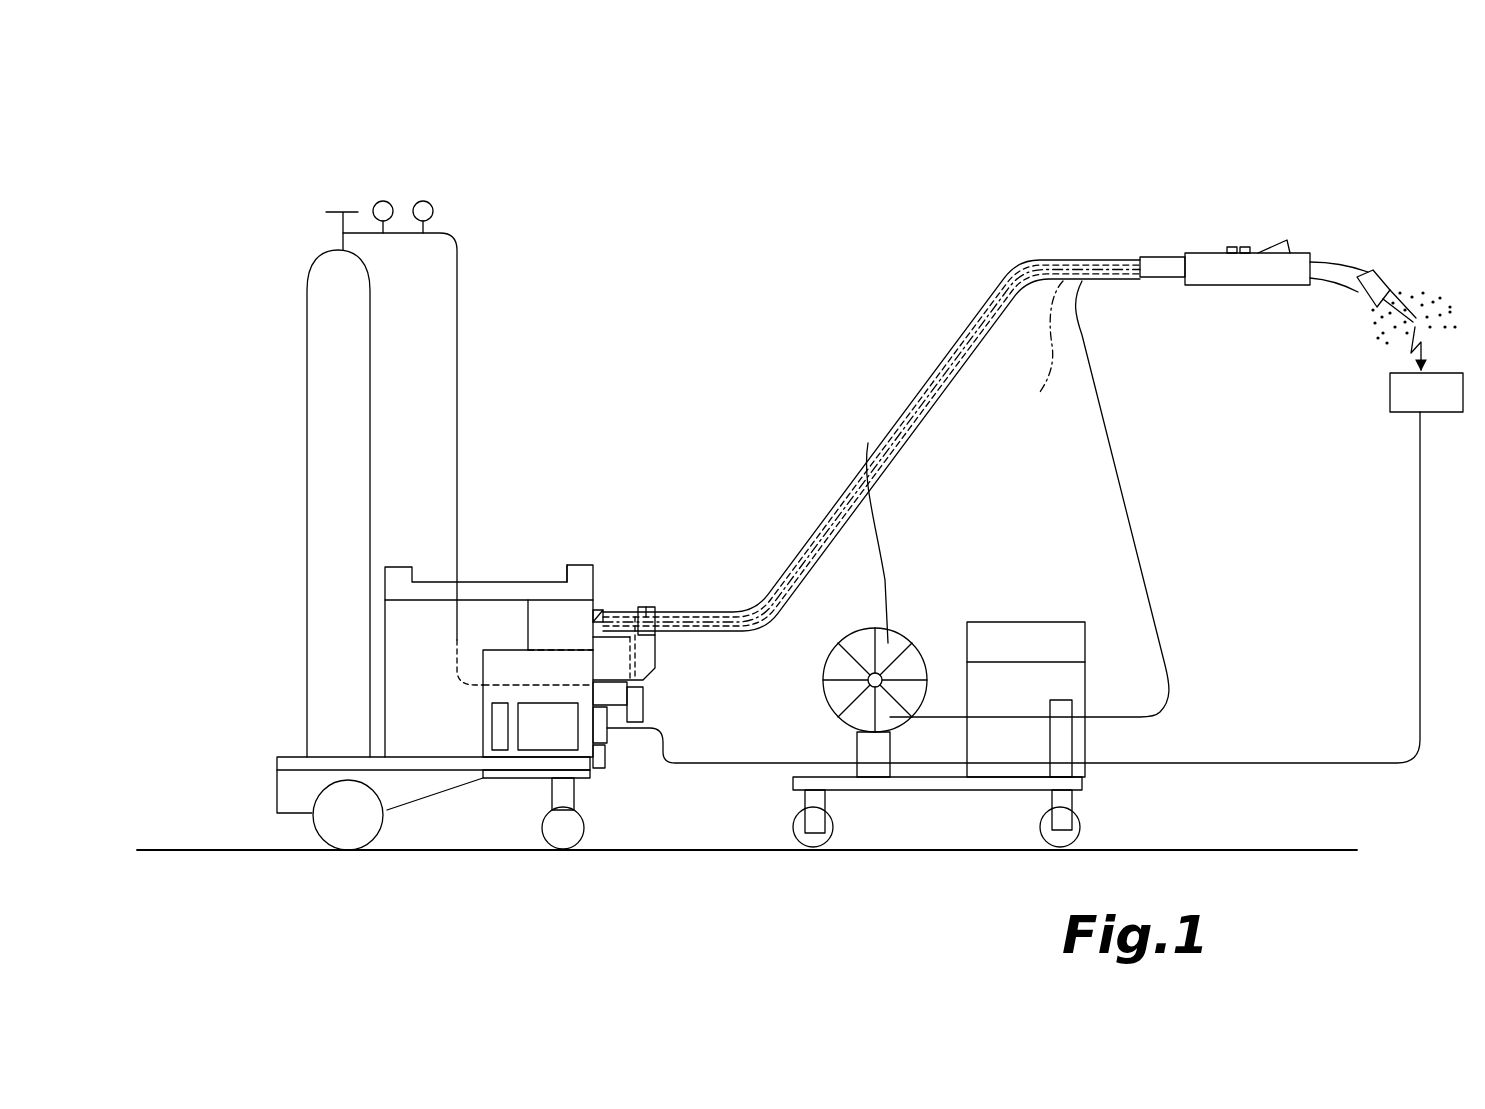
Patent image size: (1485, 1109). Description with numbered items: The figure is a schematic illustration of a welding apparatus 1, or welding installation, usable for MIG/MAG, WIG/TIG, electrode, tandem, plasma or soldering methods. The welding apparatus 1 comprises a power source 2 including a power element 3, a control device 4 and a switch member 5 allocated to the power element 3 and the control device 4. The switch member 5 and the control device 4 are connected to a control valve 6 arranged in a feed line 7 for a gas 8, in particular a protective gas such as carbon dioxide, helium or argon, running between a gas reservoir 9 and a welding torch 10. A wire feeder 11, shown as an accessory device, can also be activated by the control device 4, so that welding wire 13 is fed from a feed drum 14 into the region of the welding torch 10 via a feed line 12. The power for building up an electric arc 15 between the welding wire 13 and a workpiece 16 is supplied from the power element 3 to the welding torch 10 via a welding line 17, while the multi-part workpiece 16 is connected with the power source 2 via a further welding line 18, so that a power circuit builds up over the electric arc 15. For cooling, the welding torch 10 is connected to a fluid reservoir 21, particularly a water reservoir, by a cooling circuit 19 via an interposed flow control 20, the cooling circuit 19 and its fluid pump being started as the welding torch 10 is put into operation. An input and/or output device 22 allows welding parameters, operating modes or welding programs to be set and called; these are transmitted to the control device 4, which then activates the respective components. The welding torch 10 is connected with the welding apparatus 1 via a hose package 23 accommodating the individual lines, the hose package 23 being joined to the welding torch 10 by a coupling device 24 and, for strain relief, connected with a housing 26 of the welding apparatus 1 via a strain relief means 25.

The welding apparatus 1 is at (232, 194).
The power source 2 is at (544, 441).
The power element 3 is at (500, 737).
The control device 4 is at (480, 723).
The switch member 5 is at (619, 742).
The control valve 6 is at (604, 698).
The feed line 7 is at (1044, 352).
The gas 8 is at (1397, 266).
The gas reservoir 9 is at (340, 333).
The welding torch 10 is at (1300, 222).
The wire feeder 11 is at (1137, 810).
The feed line 12 is at (1140, 527).
The welding wire 13 is at (995, 718).
The feed drum 14 is at (875, 591).
The electric arc 15 is at (1392, 355).
The workpiece 16 is at (1435, 393).
The welding line 17 is at (985, 327).
The further welding line 18 is at (1420, 603).
The cooling circuit 19 is at (821, 530).
The flow control 20 is at (600, 610).
The fluid reservoir 21 is at (550, 612).
The input and/or output device 22 is at (590, 575).
The hose package 23 is at (711, 612).
The coupling device 24 is at (1160, 268).
The strain relief means 25 is at (643, 608).
The housing 26 is at (648, 648).